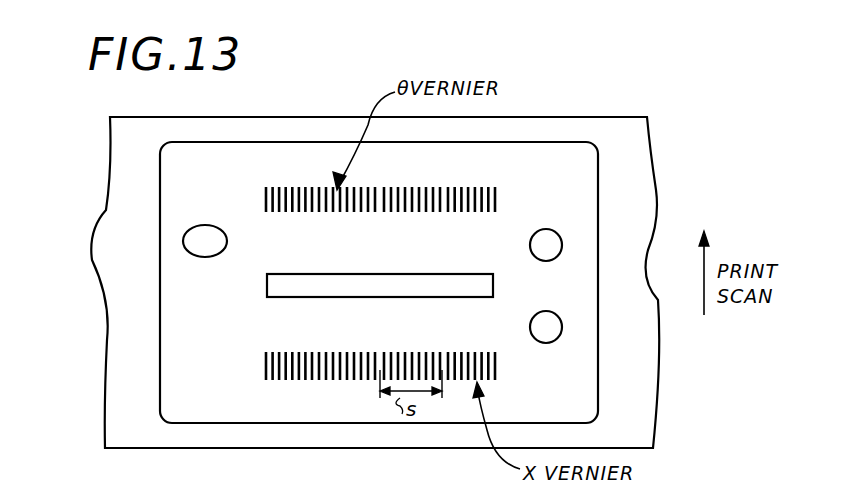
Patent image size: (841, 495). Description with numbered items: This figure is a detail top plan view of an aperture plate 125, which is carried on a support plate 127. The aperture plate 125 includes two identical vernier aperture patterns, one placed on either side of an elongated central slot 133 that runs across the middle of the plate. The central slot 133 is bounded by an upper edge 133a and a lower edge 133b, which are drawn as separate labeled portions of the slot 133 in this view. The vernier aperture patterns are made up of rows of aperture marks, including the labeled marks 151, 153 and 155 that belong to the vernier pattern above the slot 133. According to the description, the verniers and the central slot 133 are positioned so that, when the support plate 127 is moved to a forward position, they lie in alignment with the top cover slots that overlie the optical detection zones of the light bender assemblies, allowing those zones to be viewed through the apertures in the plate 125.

The aperture plate 125 is at (252, 152).
The support plate 127 is at (118, 167).
The elongated central slot 133 is at (496, 287).
The upper edge of bar 133a is at (344, 274).
The lower edge of bar 133b is at (390, 300).
The theta vernier scale 151 is at (416, 178).
The vernier bar group 153 is at (456, 203).
The vernier gap marks 155 is at (319, 190).